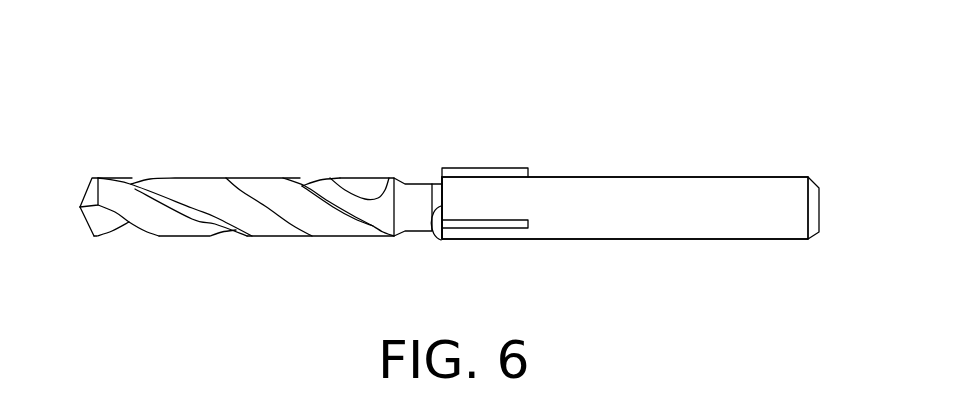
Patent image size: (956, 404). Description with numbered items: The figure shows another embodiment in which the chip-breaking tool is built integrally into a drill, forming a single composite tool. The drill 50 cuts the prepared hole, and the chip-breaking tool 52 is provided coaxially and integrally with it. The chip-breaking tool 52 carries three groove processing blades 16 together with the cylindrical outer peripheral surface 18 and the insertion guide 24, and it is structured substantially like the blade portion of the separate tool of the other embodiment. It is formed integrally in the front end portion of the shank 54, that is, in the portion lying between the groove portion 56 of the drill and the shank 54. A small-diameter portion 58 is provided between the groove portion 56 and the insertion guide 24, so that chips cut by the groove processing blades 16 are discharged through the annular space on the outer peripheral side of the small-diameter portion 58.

The drill 50 is at (669, 104).
The chip-breaking tool 52 is at (461, 150).
The shank 54 is at (690, 225).
The groove portion 56 is at (187, 250).
The small-diameter portion 58 is at (415, 195).
The insertion guide 24 is at (435, 238).
The groove processing blades 16 is at (508, 172).
The cylindrical outer peripheral surface 18 is at (468, 207).